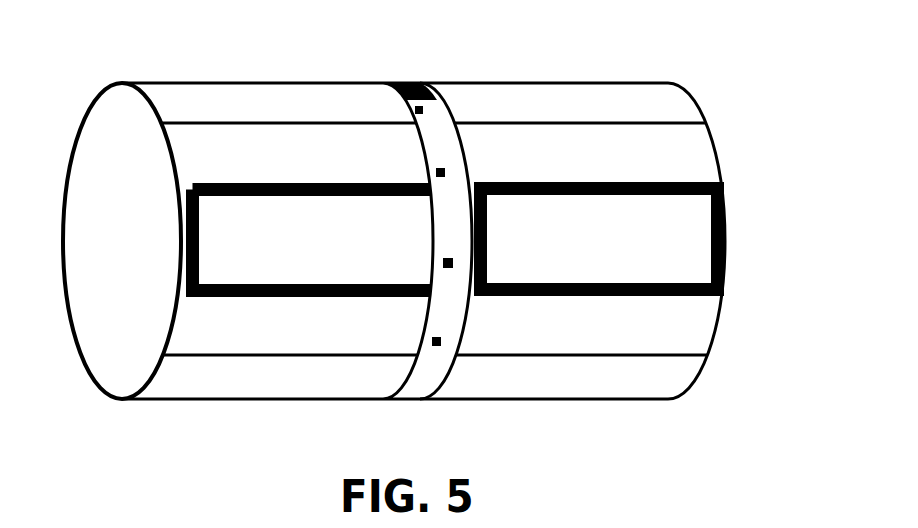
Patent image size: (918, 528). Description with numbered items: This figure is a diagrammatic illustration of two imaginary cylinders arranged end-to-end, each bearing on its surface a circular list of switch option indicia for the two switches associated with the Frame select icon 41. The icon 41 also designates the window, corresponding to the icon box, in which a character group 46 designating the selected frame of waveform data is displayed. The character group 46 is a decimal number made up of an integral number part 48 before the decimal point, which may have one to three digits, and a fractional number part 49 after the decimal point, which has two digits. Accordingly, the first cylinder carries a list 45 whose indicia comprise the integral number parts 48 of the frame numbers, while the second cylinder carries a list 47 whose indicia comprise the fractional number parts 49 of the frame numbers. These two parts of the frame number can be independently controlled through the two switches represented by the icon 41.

The Frame select icon 41 is at (122, 241).
The circular list of indicia 45 is at (90, 108).
The character group 46 is at (687, 255).
The circular list of indicia 47 is at (699, 108).
The integral number part 48 is at (321, 263).
The fractional number part 49 is at (583, 256).